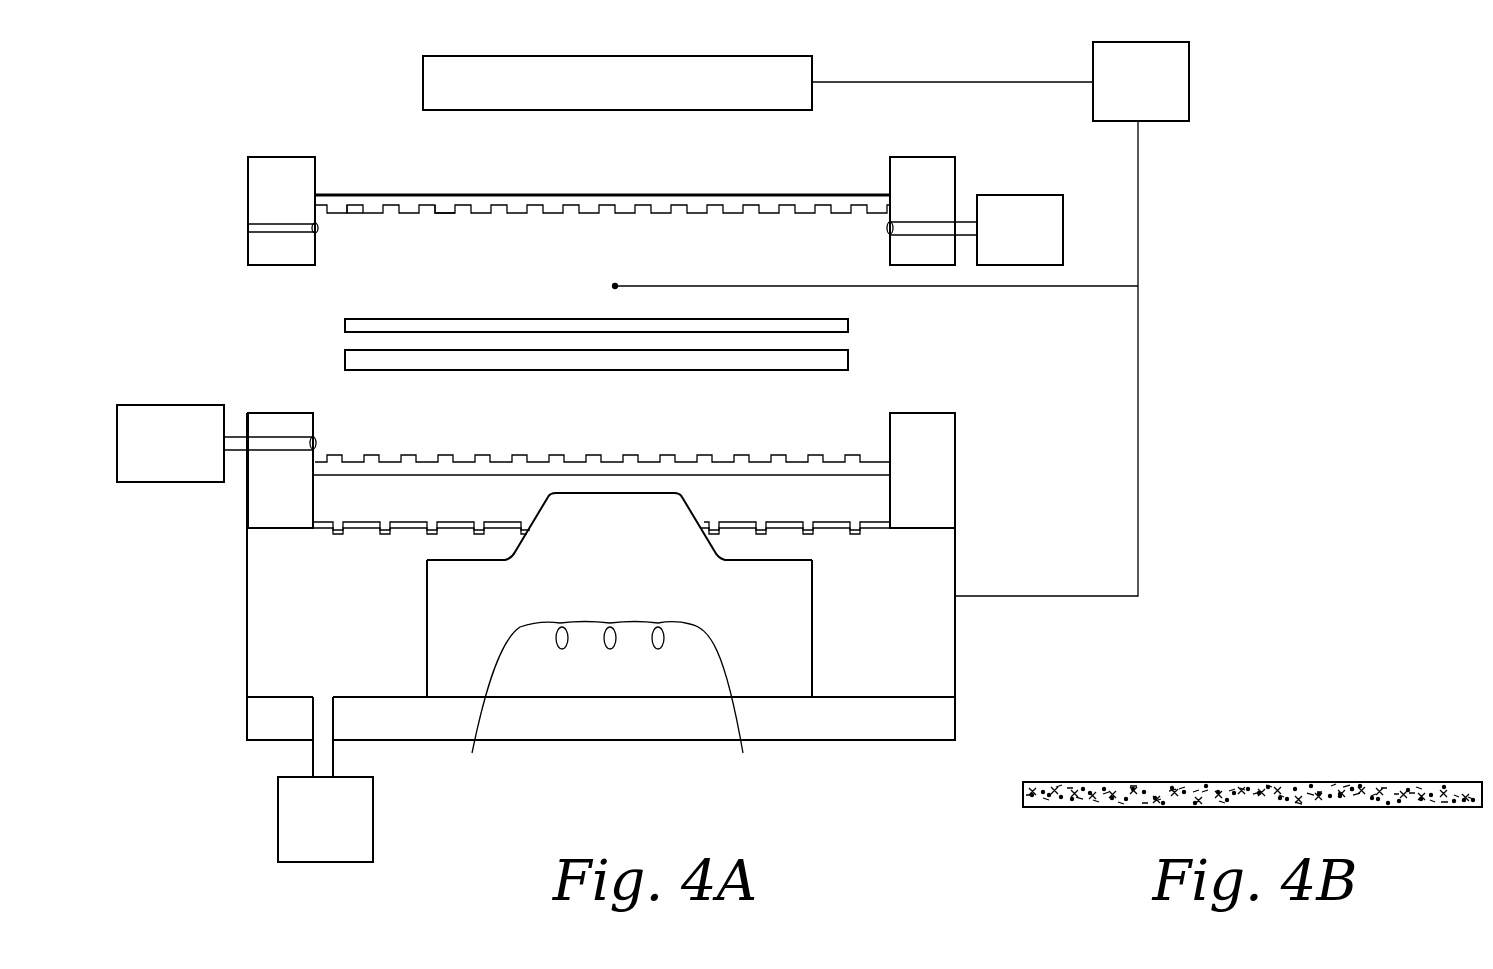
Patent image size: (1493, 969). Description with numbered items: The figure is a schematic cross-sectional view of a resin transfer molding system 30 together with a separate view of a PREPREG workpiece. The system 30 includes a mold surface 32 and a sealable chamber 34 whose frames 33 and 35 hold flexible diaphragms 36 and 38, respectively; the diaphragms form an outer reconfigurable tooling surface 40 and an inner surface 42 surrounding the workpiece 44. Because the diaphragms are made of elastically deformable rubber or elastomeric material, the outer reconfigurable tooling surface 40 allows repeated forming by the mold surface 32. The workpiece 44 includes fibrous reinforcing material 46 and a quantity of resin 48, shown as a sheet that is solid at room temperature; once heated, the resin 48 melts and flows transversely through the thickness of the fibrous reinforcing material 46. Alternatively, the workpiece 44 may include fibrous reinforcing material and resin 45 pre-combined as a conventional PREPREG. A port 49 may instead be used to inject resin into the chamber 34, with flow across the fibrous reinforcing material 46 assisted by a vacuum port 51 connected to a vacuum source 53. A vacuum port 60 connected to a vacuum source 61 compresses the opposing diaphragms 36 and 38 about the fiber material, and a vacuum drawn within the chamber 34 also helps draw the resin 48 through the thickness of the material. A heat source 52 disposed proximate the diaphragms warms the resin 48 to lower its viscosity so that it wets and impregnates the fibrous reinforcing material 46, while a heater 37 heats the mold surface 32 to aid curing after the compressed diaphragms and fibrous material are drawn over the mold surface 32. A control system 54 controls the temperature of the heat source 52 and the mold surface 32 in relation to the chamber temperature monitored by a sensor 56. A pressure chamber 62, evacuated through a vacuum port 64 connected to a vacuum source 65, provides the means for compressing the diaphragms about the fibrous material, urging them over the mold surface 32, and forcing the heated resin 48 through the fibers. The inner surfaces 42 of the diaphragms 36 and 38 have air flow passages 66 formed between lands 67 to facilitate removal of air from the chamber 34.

In FIG. 4A, the resin transfer molding system 30 is at (295, 63).
In FIG. 4A, the mold surface 32 is at (652, 490).
In FIG. 4A, the frame 33 is at (288, 150).
In FIG. 4A, the sealable chamber 34 is at (533, 302).
In FIG. 4A, the frame 35 is at (266, 488).
In FIG. 4A, the flexible diaphragm 36 is at (408, 188).
In FIG. 4A, the heater 37 is at (497, 665).
In FIG. 4A, the flexible diaphragm 38 is at (535, 450).
In FIG. 4A, the outer reconfigurable tooling surface 40 is at (740, 195).
In FIG. 4A, the inner surface 42 is at (735, 214).
In FIG. 4A, the workpiece 44 is at (533, 376).
In FIG. 4B, the workpiece 44 is at (1206, 772).
In FIG. 4B, the fibrous reinforcing material and resin 45 is at (1352, 791).
In FIG. 4A, the fibrous reinforcing material 46 is at (580, 371).
In FIG. 4A, the resin 48 is at (572, 319).
In FIG. 4A, the port 49 is at (248, 230).
In FIG. 4A, the vacuum port 51 is at (940, 226).
In FIG. 4A, the heat source 52 is at (614, 100).
In FIG. 4A, the vacuum source 53 is at (1004, 243).
In FIG. 4A, the control system 54 is at (1122, 95).
In FIG. 4A, the sensor 56 is at (617, 286).
In FIG. 4A, the vacuum port 60 is at (316, 443).
In FIG. 4A, the vacuum source 61 is at (147, 458).
In FIG. 4A, the pressure chamber 62 is at (316, 621).
In FIG. 4A, the vacuum port 64 is at (323, 703).
In FIG. 4A, the vacuum source 65 is at (306, 833).
In FIG. 4A, the air flow passages 66 is at (450, 211).
In FIG. 4A, the lands 67 is at (356, 211).